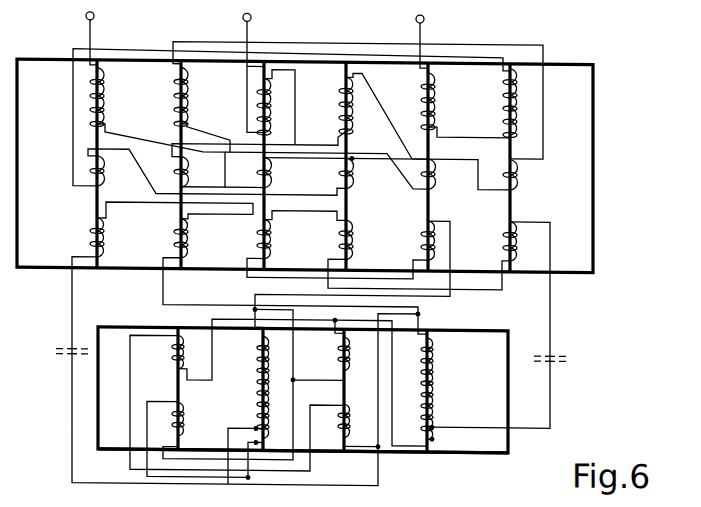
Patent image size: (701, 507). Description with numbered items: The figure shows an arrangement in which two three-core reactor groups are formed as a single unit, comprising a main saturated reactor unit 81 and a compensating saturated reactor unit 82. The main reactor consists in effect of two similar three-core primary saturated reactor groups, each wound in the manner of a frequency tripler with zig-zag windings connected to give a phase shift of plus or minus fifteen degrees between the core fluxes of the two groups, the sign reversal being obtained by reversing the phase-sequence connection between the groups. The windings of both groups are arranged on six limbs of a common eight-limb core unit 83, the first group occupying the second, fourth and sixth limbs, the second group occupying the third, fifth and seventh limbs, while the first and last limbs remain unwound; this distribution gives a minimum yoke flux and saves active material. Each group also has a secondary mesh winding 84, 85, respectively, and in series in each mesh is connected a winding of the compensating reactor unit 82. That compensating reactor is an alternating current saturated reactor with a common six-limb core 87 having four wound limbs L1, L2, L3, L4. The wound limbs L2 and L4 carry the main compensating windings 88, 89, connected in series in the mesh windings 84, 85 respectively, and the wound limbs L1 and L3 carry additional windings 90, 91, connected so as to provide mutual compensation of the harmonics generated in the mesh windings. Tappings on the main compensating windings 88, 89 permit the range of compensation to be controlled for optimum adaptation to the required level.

The main saturated reactor unit 81 is at (321, 160).
The compensating saturated reactor unit 82 is at (316, 393).
The eight-limb core unit 83 is at (576, 58).
The secondary mesh winding 84 is at (250, 239).
The secondary mesh winding 85 is at (333, 239).
The six-limb core 87 is at (487, 449).
The main compensating winding 88 is at (251, 387).
The main compensating winding 89 is at (415, 389).
The additional winding 90 is at (168, 385).
The additional winding 91 is at (334, 387).
The wound limb L1 is at (192, 389).
The wound limb L2 is at (277, 390).
The wound limb L3 is at (357, 390).
The wound limb L4 is at (443, 391).